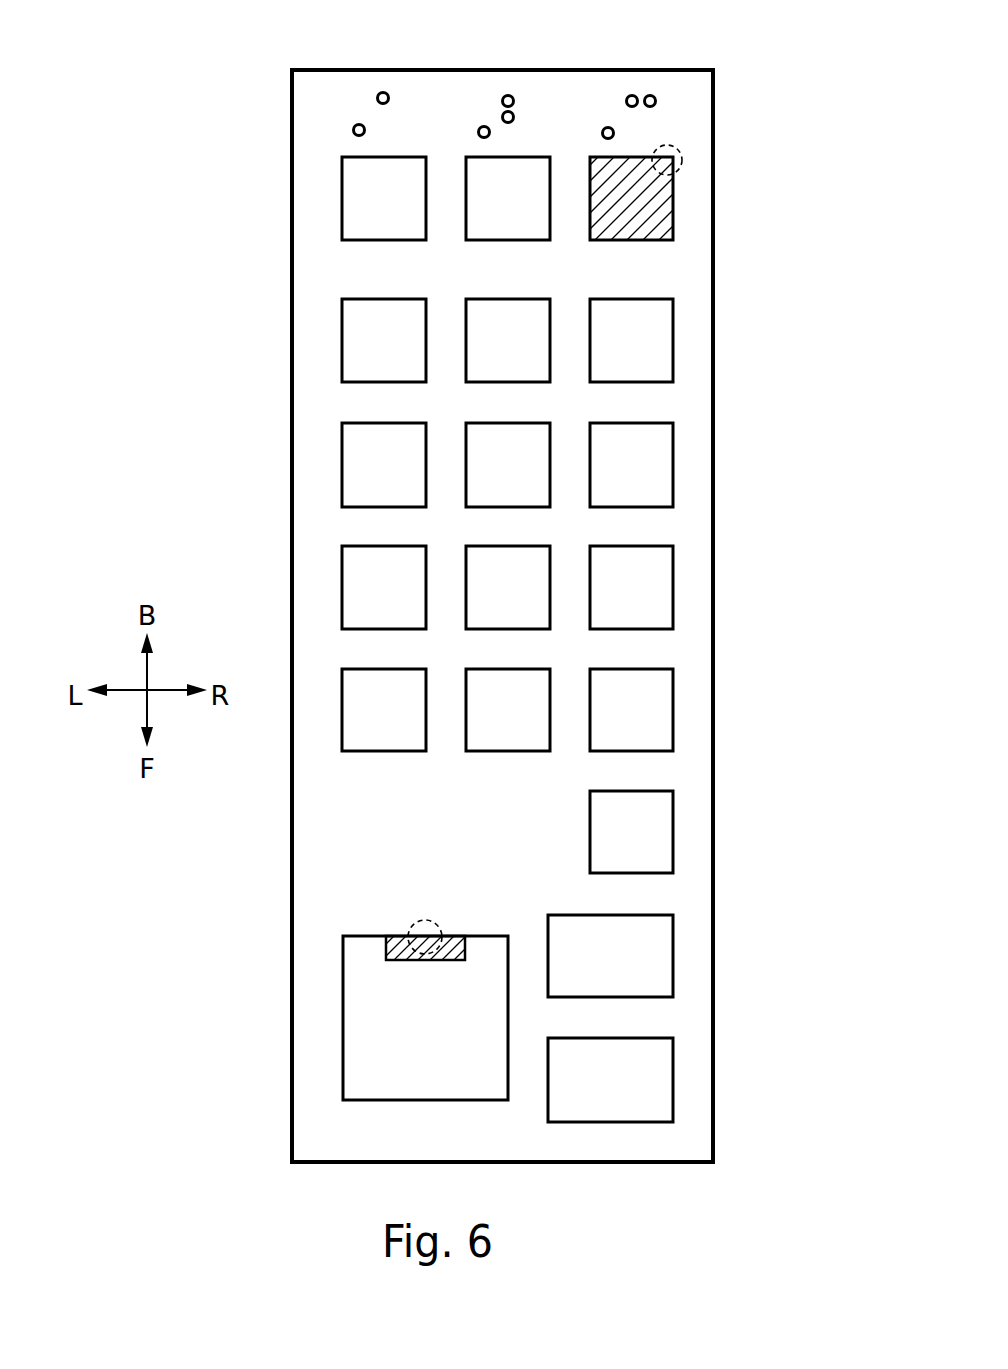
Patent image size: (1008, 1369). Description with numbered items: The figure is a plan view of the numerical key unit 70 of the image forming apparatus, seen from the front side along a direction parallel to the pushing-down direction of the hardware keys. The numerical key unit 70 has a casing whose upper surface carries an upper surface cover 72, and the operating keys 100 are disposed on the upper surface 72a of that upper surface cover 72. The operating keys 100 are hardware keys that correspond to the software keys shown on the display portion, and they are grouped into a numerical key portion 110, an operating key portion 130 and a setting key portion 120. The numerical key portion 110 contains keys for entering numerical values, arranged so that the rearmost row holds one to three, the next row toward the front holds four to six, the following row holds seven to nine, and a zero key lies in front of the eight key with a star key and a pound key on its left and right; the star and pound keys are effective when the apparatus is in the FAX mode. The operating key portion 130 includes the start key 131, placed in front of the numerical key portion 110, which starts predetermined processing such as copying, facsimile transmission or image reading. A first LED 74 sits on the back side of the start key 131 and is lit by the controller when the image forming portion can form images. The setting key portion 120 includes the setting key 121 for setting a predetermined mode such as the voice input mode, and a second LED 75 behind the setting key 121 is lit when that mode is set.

The numerical key unit 70 is at (201, 80).
The upper surface cover 72 is at (292, 473).
The upper surface 72a is at (325, 803).
The operating keys 100 is at (797, 1040).
The numerical key portion 110 is at (730, 297).
The setting key portion 120 is at (730, 155).
The setting key 121 is at (590, 157).
The second LED 75 is at (678, 148).
The operating key portion 130 is at (730, 792).
The start key 131 is at (357, 936).
The first LED 74 is at (440, 920).